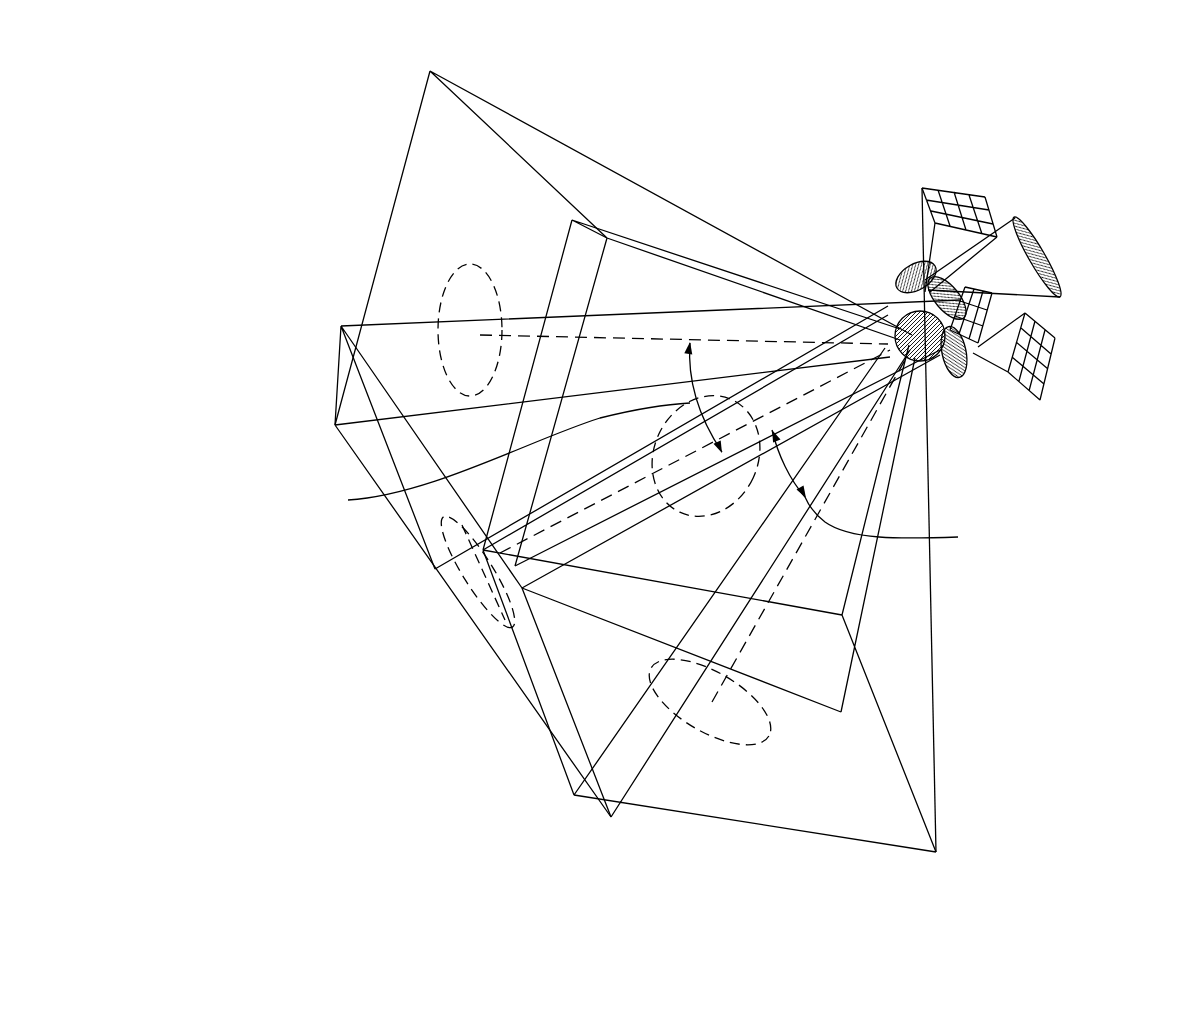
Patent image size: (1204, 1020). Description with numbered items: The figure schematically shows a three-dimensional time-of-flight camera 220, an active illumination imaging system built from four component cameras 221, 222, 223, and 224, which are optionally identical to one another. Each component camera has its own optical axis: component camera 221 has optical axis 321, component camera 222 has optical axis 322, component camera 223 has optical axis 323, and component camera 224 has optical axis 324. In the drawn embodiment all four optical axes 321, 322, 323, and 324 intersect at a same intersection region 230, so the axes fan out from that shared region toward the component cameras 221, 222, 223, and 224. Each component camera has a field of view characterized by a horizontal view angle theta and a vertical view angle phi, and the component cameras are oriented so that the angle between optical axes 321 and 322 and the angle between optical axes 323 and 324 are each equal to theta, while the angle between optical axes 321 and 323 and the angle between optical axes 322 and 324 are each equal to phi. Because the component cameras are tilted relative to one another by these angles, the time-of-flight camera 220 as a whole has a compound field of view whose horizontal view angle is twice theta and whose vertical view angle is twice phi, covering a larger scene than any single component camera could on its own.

The 3D TOF camera 220 is at (325, 158).
The intersection region 230 is at (889, 348).
The component camera 224 is at (970, 180).
The component camera 223 is at (1060, 245).
The component camera 222 is at (1005, 310).
The component camera 221 is at (990, 398).
The optical axis 321 is at (482, 335).
The optical axis 322 is at (700, 406).
The optical axis 323 is at (510, 617).
The optical axis 324 is at (740, 635).